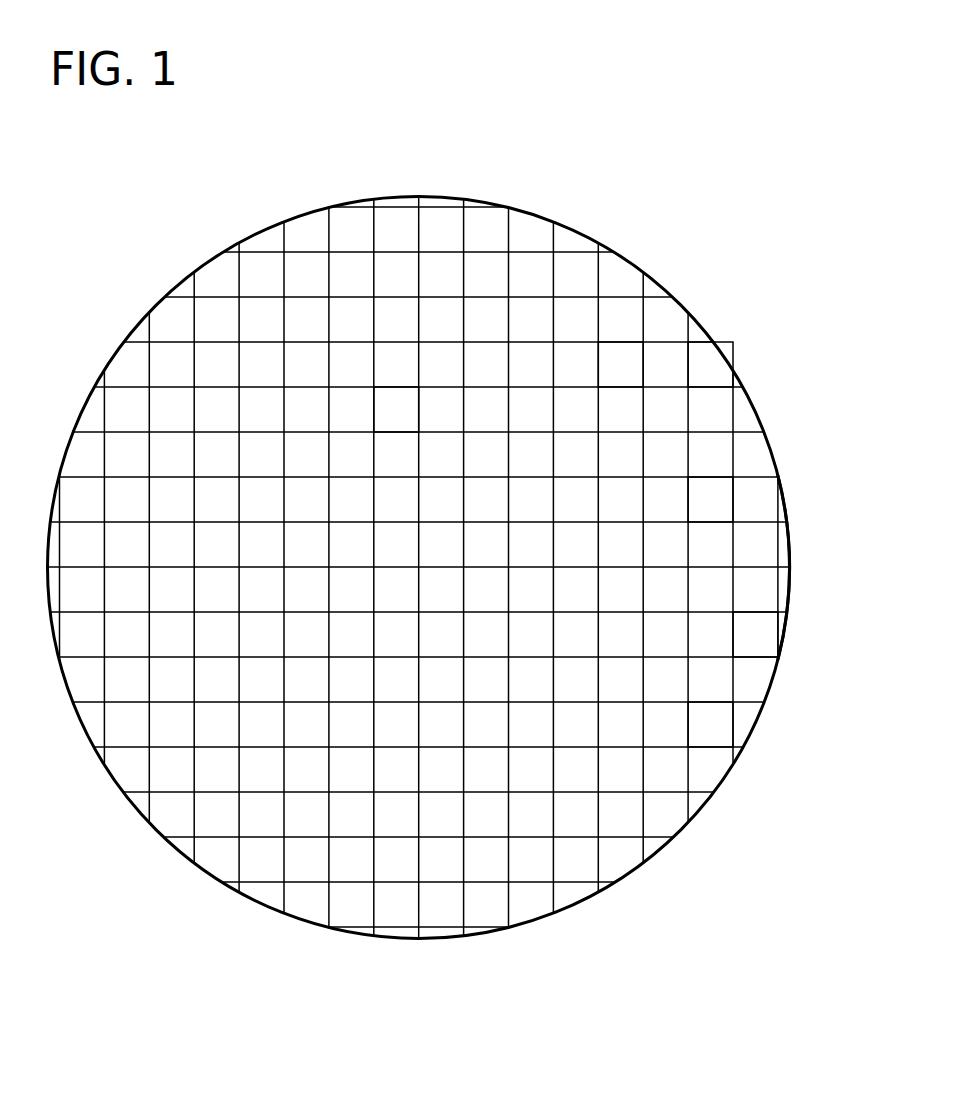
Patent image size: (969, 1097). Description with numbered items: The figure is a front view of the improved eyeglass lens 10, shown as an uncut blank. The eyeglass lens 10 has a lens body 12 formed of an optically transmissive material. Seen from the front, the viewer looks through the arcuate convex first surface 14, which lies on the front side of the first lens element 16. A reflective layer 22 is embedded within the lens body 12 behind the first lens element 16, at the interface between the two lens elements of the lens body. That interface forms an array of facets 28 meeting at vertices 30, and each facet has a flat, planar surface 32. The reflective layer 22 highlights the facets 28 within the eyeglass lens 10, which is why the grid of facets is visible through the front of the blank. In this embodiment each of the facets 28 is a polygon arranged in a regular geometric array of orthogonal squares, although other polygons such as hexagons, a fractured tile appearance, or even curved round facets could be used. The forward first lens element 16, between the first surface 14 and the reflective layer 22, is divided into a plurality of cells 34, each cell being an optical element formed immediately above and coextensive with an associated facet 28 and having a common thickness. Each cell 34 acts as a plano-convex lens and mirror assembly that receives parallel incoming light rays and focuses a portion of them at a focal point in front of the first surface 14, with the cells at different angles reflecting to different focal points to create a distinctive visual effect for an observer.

The eyeglass lens 10 is at (419, 507).
The lens body 12 is at (638, 256).
The first surface 14 is at (785, 557).
The first lens element 16 is at (755, 632).
The reflective layer 22 is at (411, 422).
The facets 28 is at (639, 374).
The vertices 30 is at (693, 385).
The flat/planar surface 32 is at (710, 726).
The cells 34 is at (713, 505).